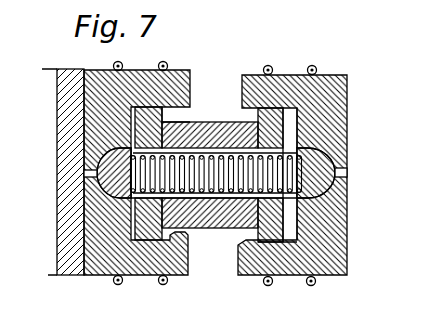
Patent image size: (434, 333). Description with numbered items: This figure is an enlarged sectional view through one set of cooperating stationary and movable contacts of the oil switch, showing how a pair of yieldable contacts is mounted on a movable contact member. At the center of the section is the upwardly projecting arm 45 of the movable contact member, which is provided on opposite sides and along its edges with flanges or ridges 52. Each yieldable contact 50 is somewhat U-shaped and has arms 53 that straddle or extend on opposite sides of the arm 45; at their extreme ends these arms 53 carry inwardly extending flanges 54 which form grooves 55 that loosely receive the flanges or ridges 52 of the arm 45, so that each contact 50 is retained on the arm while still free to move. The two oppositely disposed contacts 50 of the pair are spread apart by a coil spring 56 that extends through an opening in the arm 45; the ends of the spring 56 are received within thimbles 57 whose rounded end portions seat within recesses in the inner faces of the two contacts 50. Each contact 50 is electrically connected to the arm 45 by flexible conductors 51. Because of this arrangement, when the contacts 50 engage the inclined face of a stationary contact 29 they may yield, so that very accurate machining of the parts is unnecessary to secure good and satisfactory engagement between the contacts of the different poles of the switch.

The stationary contact 29 is at (70, 276).
The arms of the contact 53 is at (143, 80).
The grooves 55 is at (190, 107).
The inwardly extending flanges 54 is at (253, 118).
The yieldable contact 50 is at (338, 118).
The flexible conductors 51 is at (312, 286).
The thimbles 57 is at (322, 163).
The flanges or ridges 52 is at (272, 236).
The coil spring 56 is at (198, 191).
The arm 45 is at (223, 229).